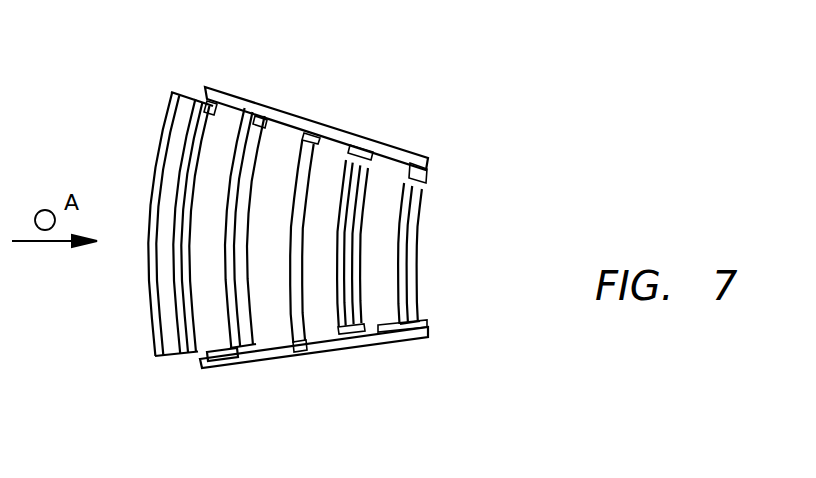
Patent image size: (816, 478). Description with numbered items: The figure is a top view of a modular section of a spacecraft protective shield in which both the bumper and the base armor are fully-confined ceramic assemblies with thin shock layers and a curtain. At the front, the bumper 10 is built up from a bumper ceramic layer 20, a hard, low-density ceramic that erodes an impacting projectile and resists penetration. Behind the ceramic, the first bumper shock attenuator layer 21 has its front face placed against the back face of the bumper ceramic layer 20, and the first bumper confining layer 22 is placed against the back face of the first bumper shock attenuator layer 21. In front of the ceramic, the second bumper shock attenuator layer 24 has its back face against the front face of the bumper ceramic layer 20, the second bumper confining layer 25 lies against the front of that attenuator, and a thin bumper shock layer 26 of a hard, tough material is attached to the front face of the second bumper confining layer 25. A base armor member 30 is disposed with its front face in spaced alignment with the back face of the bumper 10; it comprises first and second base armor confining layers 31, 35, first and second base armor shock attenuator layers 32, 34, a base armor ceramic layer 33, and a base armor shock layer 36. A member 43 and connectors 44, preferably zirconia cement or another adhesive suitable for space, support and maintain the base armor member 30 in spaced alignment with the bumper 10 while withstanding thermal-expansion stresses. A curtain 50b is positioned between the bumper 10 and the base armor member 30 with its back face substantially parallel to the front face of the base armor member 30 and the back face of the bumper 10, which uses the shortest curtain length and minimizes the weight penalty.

The bumper 10 is at (156, 354).
The bumper ceramic layer 20 is at (227, 126).
The first bumper shock attenuator layer 21 is at (238, 143).
The first bumper confining layer 22 is at (242, 360).
The second bumper shock attenuator layer 24 is at (196, 110).
The second bumper confining layer 25 is at (199, 108).
The bumper shock layer 26 is at (171, 108).
The base armor member 30 is at (415, 323).
The first base armor confining layer 31 is at (420, 218).
The first base armor shock attenuator layer 32 is at (415, 205).
The base armor ceramic layer 33 is at (420, 200).
The second base armor shock attenuator layer 34 is at (386, 195).
The second base armor confining layer 35 is at (360, 152).
The base armor shock layer 36 is at (352, 148).
The member 43 is at (256, 360).
The connectors 44 is at (395, 330).
The curtain 50b is at (300, 345).